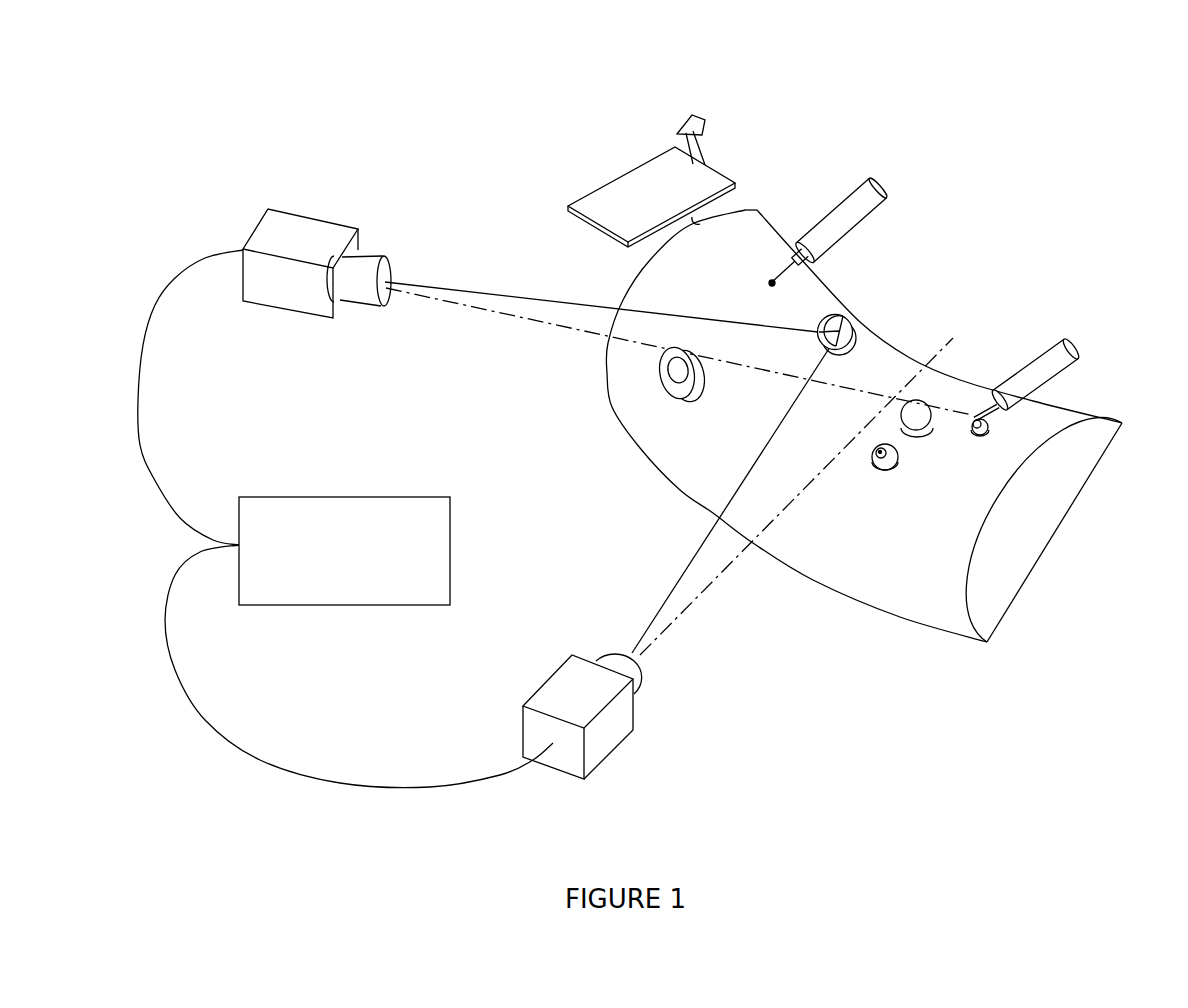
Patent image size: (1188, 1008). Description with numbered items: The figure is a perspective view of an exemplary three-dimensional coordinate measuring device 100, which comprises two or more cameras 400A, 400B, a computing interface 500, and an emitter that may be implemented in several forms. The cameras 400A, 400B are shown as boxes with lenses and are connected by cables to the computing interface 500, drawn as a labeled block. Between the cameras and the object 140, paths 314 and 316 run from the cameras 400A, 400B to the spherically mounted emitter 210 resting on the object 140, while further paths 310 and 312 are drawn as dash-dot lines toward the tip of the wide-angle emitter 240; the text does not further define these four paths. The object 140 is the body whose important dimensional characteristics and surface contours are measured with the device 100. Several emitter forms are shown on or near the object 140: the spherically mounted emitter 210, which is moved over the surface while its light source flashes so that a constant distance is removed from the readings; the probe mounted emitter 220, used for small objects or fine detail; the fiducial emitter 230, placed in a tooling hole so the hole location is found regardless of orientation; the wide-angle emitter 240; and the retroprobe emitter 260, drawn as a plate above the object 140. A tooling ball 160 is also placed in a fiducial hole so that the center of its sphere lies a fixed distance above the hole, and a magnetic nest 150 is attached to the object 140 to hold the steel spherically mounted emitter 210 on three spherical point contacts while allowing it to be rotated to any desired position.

The three-dimensional coordinate measuring device 100 is at (518, 112).
The object 140 is at (1083, 410).
The magnetic nest 150 is at (662, 388).
The tooling ball 160 is at (928, 395).
The spherically mounted emitter 210 is at (856, 318).
The probe mounted emitter 220 is at (878, 180).
The fiducial emitter 230 is at (892, 470).
The wide-angle emitter 240 is at (1075, 338).
The retroprobe emitter 260 is at (715, 170).
The line of sight (dashed) from first camera 310 is at (507, 308).
The line of sight (dashed) from second camera 312 is at (697, 593).
The line of sight from first camera to sensor 314 is at (505, 295).
The line of sight from second camera to sensor 316 is at (668, 590).
The camera 400A is at (255, 228).
The camera 400B is at (612, 752).
The computing interface 500 is at (350, 497).